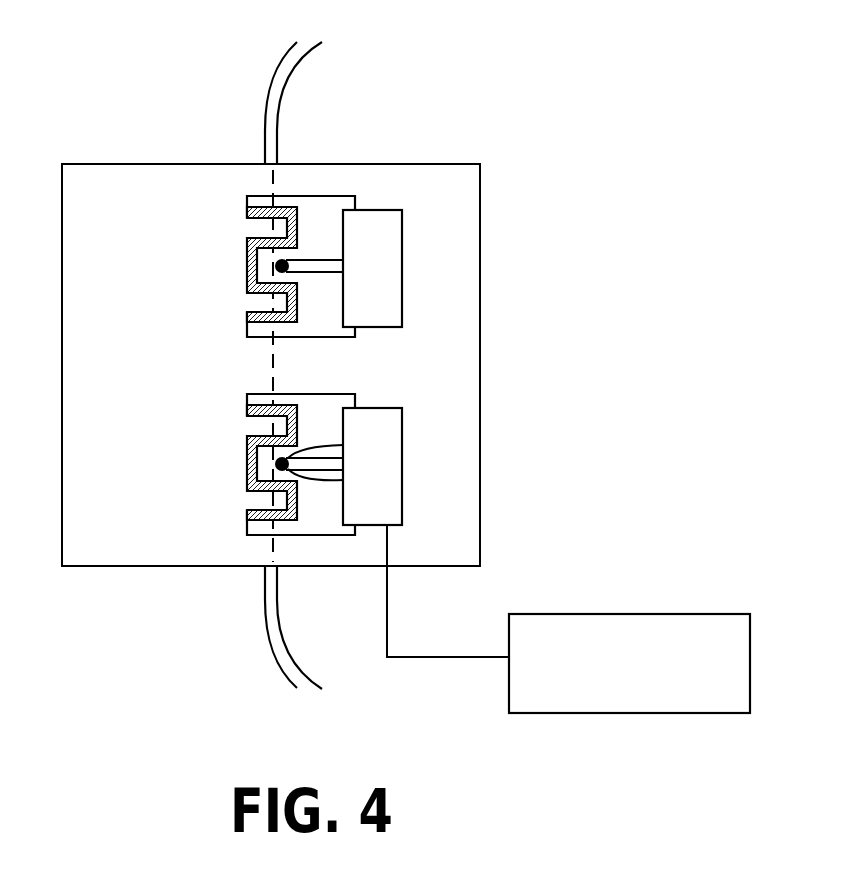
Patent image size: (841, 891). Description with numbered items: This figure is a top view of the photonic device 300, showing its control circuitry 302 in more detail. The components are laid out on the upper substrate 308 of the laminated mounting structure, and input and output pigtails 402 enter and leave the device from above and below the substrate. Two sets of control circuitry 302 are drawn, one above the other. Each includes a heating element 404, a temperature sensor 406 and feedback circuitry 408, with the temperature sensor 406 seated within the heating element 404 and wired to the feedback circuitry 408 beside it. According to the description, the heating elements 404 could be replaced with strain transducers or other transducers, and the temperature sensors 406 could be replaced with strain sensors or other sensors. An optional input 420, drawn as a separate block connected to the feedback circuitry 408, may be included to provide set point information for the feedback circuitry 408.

The photonic device 300 is at (409, 373).
The control circuitry 302 is at (329, 362).
The upper substrate 308 is at (463, 177).
The input and output pigtails 402 is at (272, 82).
The heating elements 404 is at (247, 250).
The temperature sensors 406 is at (290, 265).
The feedback circuitry 408 is at (383, 228).
The optional input 420 is at (680, 614).